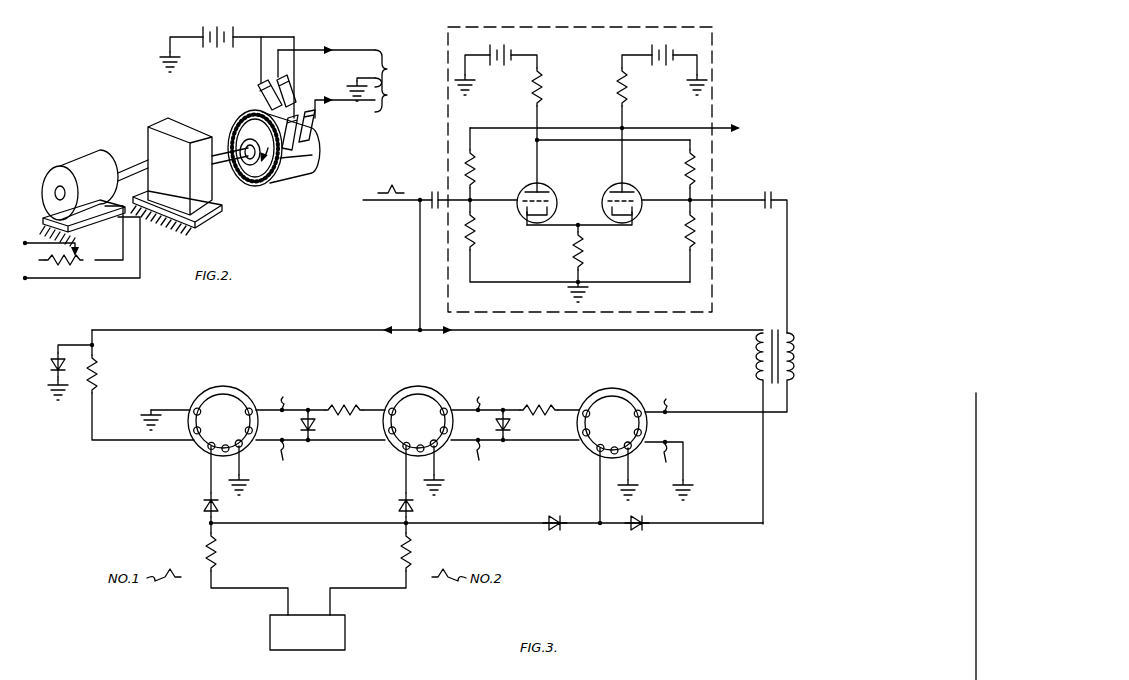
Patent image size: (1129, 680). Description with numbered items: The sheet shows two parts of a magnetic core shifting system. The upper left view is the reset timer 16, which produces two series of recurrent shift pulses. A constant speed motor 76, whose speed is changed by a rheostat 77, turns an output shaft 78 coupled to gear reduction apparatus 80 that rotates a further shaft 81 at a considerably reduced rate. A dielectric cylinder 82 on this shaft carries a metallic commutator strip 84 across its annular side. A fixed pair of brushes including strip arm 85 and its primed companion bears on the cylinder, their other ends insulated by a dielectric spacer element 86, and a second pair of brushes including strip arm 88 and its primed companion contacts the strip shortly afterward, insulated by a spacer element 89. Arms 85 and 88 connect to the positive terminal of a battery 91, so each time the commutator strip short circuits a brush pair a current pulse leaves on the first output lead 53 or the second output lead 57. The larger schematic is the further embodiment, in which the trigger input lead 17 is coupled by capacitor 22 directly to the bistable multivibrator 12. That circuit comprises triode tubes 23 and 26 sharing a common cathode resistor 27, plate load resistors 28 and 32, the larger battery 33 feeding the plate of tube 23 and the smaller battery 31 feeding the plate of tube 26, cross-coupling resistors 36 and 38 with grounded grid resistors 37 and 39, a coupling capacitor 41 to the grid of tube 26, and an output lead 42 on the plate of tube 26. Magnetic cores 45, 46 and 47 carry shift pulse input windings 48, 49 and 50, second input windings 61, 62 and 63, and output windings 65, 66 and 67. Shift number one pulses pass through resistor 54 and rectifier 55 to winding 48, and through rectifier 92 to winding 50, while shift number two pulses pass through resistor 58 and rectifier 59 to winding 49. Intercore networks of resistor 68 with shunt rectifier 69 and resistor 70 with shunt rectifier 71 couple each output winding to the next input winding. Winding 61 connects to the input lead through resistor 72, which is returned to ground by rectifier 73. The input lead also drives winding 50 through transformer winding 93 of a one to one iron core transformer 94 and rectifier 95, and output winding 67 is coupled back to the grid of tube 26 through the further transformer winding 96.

In FIG. 2, the reset timer 16 is at (132, 80).
In FIG. 3, the reset timer 16 is at (347, 633).
In FIG. 2, the constant speed motor 76 is at (52, 167).
In FIG. 2, the rheostat 77 is at (75, 274).
In FIG. 2, the output shaft 78 is at (127, 162).
In FIG. 2, the gear reduction apparatus 80 is at (159, 123).
In FIG. 2, the further shaft 81 is at (235, 172).
In FIG. 2, the dielectric cylinder 82 is at (285, 187).
In FIG. 2, the metallic commutator strip 84 is at (312, 165).
In FIG. 2, the metallic strip arm 85 is at (288, 80).
In FIG. 2, the dielectric spacer element 86 is at (257, 82).
In FIG. 2, the metallic strip arm 88 is at (318, 146).
In FIG. 2, the dielectric spacer element 89 is at (316, 118).
In FIG. 2, the battery 91 is at (199, 33).
In FIG. 2, the first output lead 53 is at (350, 48).
In FIG. 3, the first output lead 53 is at (286, 600).
In FIG. 2, the second output lead 57 is at (372, 102).
In FIG. 3, the second output lead 57 is at (332, 600).
In FIG. 3, the bistable multivibrator circuit 12 is at (712, 55).
In FIG. 3, the trigger input lead 17 is at (417, 203).
In FIG. 3, the input coupling capacitor 22 is at (432, 198).
In FIG. 3, the triode vacuum tube 23 is at (538, 186).
In FIG. 3, the triode vacuum tube 26 is at (618, 184).
In FIG. 3, the common cathode resistor 27 is at (581, 267).
In FIG. 3, the plate load resistor 28 is at (537, 100).
In FIG. 3, the battery 31 is at (650, 50).
In FIG. 3, the plate load resistor 32 is at (622, 100).
In FIG. 3, the battery 33 is at (513, 50).
In FIG. 3, the resistor 36 is at (690, 160).
In FIG. 3, the resistor 37 is at (690, 248).
In FIG. 3, the resistor 38 is at (470, 159).
In FIG. 3, the resistor 39 is at (470, 247).
In FIG. 3, the input coupling capacitor 41 is at (780, 194).
In FIG. 3, the output lead 42 is at (736, 125).
In FIG. 3, the magnetic core 45 is at (234, 390).
In FIG. 3, the magnetic core 46 is at (429, 390).
In FIG. 3, the magnetic core 47 is at (624, 390).
In FIG. 3, the shift pulse input winding 48 is at (195, 453).
In FIG. 3, the shift pulse input winding 49 is at (392, 453).
In FIG. 3, the shift pulse input winding 50 is at (588, 455).
In FIG. 3, the current-limiting resistor 54 is at (218, 549).
In FIG. 3, the rectifier 55 is at (199, 506).
In FIG. 3, the current-limiting resistor 58 is at (399, 550).
In FIG. 3, the rectifier 59 is at (392, 506).
In FIG. 3, the second input winding 61 is at (208, 394).
In FIG. 3, the second input winding 62 is at (401, 394).
In FIG. 3, the second input winding 63 is at (595, 394).
In FIG. 3, the output winding 65 is at (223, 421).
In FIG. 3, the output winding 66 is at (418, 421).
In FIG. 3, the output winding 67 is at (612, 423).
In FIG. 3, the resistor 68 is at (345, 406).
In FIG. 3, the rectifier 69 is at (322, 432).
In FIG. 3, the series resistor 70 is at (540, 406).
In FIG. 3, the shunt rectifier 71 is at (517, 432).
In FIG. 3, the resistor 72 is at (99, 374).
In FIG. 3, the rectifier 73 is at (47, 354).
In FIG. 3, the rectifier 92 is at (551, 533).
In FIG. 3, the rectifier 95 is at (635, 533).
In FIG. 3, the transformer winding 93 is at (764, 376).
In FIG. 3, the iron core transformer 94 is at (772, 327).
In FIG. 3, the transformer winding 96 is at (794, 376).